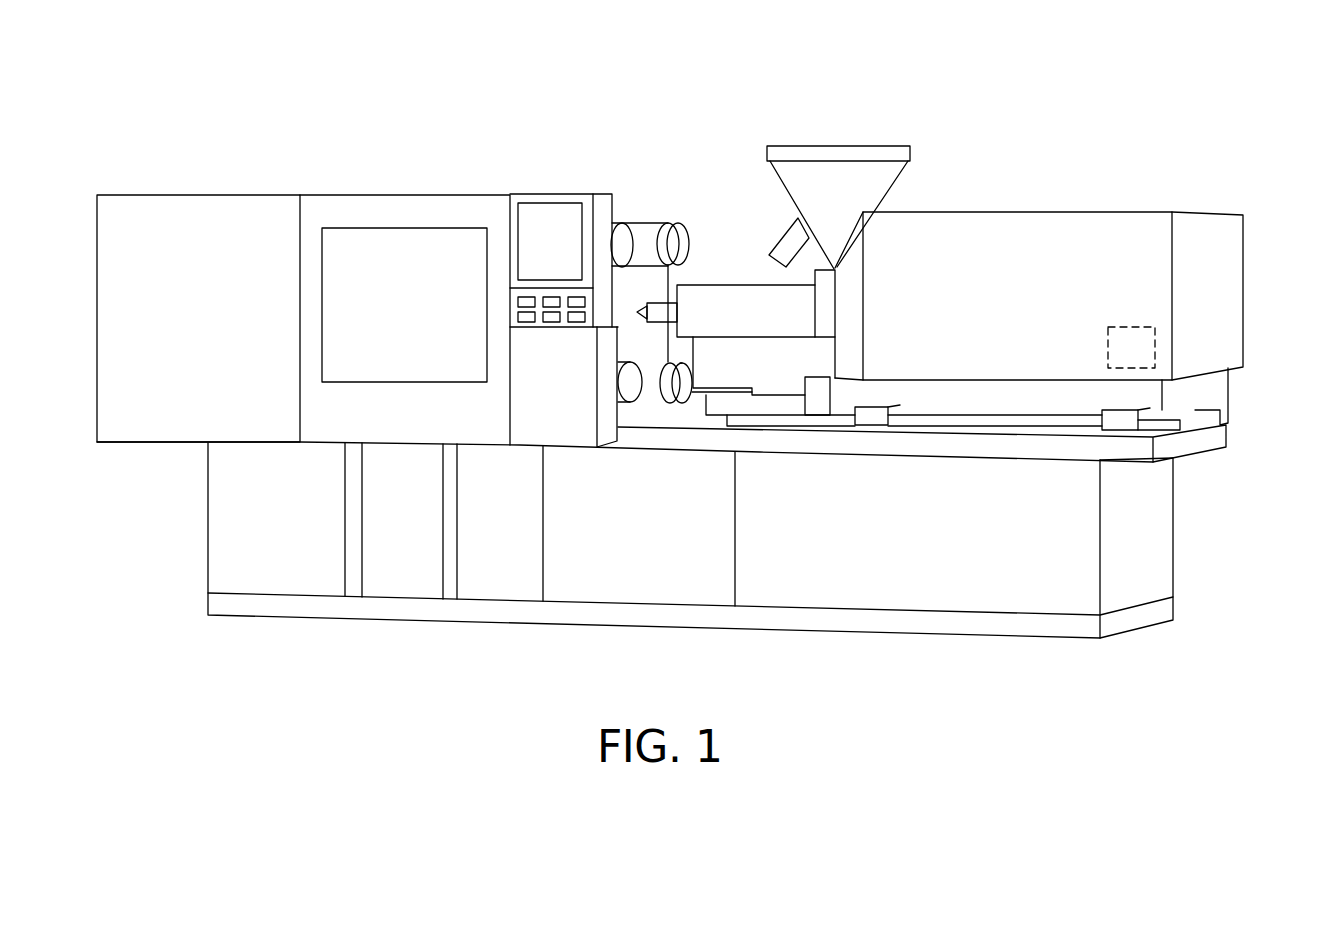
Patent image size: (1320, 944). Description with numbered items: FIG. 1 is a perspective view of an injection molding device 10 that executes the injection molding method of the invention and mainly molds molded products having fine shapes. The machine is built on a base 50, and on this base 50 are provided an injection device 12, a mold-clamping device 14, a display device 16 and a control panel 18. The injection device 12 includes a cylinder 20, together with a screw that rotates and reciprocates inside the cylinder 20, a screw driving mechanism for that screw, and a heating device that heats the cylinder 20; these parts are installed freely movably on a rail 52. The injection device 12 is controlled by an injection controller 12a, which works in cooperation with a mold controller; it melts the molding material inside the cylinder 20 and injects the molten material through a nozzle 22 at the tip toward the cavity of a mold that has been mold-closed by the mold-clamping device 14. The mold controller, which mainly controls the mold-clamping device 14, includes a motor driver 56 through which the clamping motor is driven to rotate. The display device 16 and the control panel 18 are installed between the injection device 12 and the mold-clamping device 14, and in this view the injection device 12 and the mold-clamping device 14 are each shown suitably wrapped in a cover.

The injection molding device 10 is at (684, 104).
The injection device 12 is at (1015, 137).
The injection controller 12a is at (1150, 344).
The mold-clamping device 14 is at (424, 118).
The display device 16 is at (537, 218).
The control panel 18 is at (576, 298).
The cylinder 20 is at (750, 297).
The nozzle 22 is at (637, 308).
The base 50 is at (1162, 556).
The rail 52 is at (965, 420).
The motor driver 56 is at (877, 170).